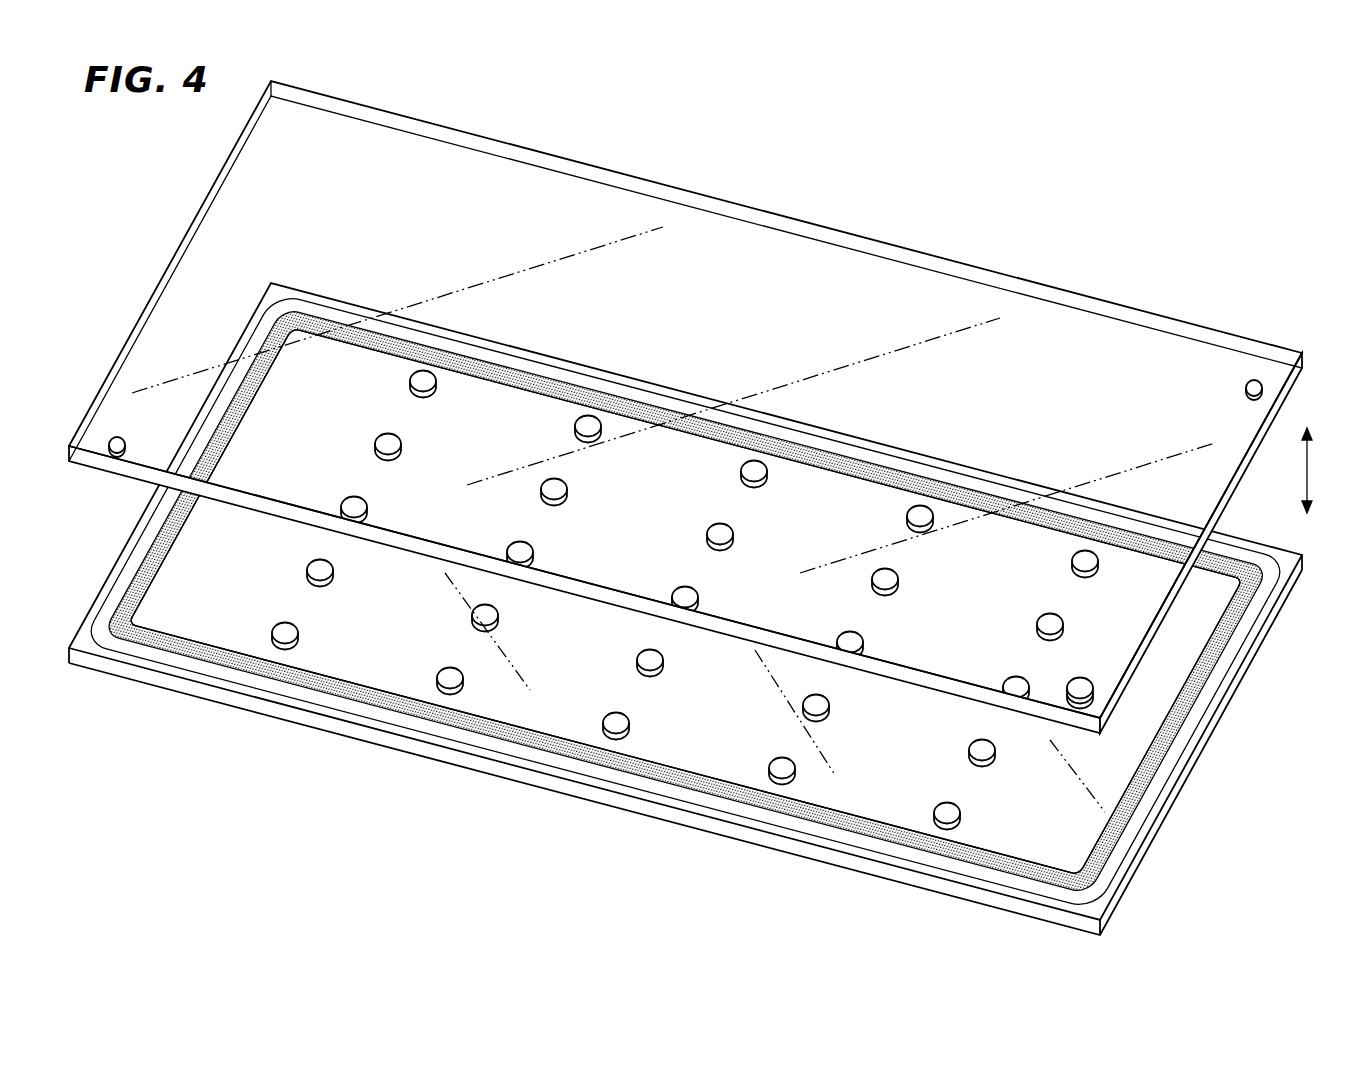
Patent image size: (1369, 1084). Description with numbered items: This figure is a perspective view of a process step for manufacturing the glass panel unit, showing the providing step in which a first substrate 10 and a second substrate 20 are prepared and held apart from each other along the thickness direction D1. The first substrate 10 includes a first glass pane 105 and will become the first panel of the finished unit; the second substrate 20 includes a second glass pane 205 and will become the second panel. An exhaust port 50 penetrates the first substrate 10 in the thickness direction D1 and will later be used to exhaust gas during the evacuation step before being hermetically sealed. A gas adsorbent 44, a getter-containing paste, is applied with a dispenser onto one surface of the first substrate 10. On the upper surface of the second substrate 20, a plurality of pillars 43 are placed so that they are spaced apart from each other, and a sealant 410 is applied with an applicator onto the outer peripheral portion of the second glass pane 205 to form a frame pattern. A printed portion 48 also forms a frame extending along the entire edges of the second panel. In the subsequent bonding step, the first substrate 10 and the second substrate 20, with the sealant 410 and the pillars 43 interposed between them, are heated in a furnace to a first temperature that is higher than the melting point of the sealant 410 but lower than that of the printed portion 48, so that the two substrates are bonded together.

The first substrate 10 is at (534, 177).
The first glass pane 105 is at (740, 262).
The gas adsorbent 44 is at (124, 441).
The second substrate 20 is at (406, 742).
The second glass pane 205 is at (576, 652).
The pillars 43 is at (449, 675).
The printed portion 48 is at (1000, 862).
The sealant 410 is at (862, 845).
The exhaust port 50 is at (1084, 683).
The thickness direction D1 is at (1324, 470).